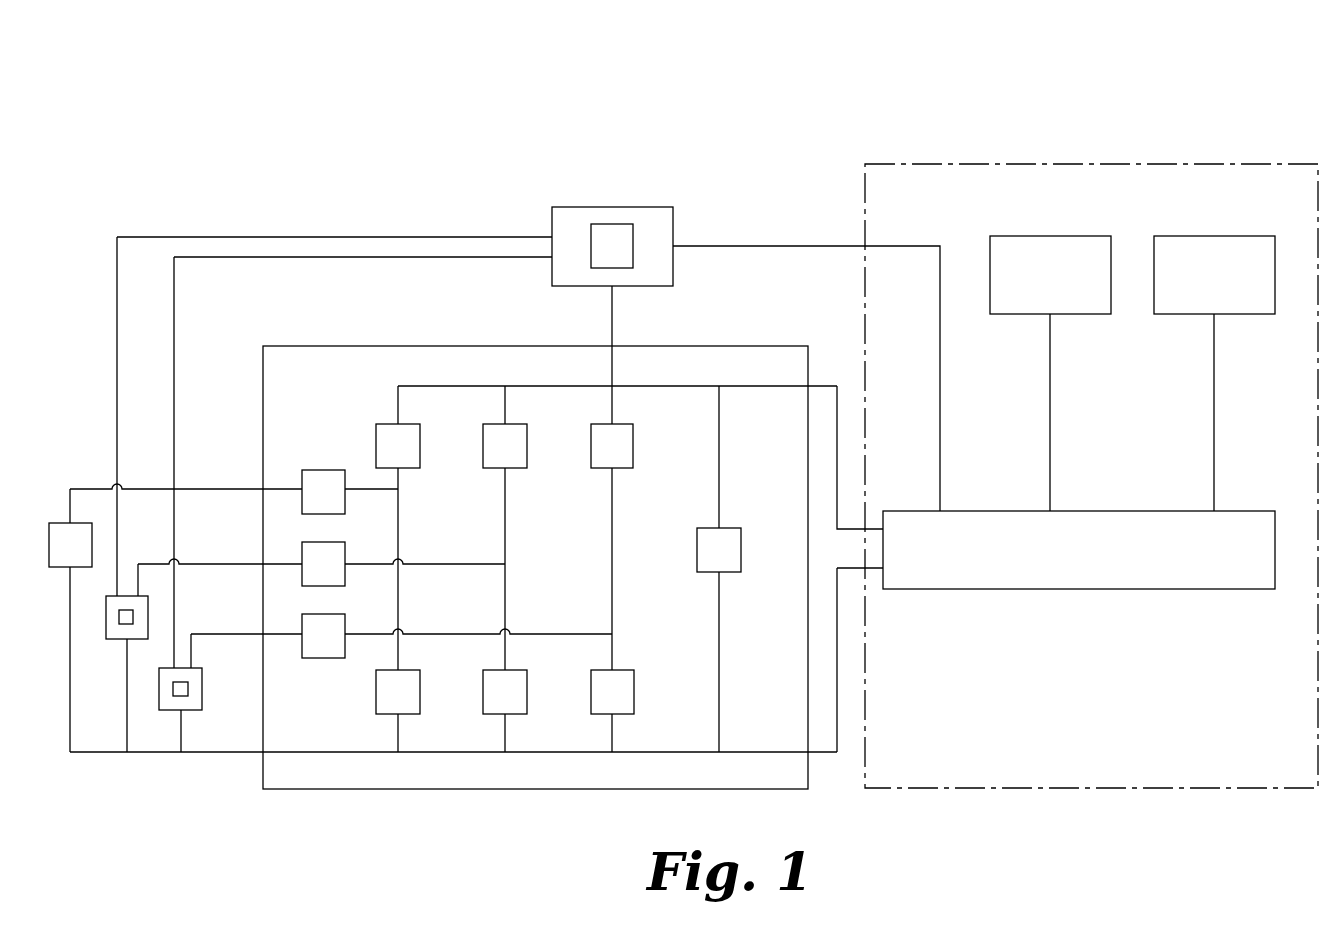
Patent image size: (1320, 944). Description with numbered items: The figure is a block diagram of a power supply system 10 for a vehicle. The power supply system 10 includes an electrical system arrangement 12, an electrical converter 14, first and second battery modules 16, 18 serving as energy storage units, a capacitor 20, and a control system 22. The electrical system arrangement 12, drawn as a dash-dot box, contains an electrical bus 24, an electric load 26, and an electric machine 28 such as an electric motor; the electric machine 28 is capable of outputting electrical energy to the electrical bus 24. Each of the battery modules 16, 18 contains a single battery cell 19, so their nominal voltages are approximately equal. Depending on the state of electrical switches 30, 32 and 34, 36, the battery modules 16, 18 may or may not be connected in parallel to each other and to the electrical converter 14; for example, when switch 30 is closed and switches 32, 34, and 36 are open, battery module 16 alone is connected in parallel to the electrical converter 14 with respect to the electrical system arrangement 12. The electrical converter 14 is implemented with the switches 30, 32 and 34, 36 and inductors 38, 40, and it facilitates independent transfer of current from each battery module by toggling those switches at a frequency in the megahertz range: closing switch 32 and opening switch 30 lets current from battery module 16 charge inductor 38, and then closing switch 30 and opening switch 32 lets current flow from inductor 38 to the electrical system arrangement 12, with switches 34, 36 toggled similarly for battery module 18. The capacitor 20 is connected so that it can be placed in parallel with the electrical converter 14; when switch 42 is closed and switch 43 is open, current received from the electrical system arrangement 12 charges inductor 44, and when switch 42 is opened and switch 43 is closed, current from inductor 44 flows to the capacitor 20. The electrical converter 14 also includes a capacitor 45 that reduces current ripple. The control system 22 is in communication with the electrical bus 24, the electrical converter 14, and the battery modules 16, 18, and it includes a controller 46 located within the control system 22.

The power supply system 10 is at (1208, 96).
The electrical system arrangement 12 is at (1160, 789).
The electrical converter 14 is at (387, 790).
The first battery module 16 is at (202, 692).
The second battery module 18 is at (113, 640).
The battery cell 19 is at (127, 624).
The capacitor 20 is at (49, 549).
The control system 22 is at (577, 287).
The electrical bus 24 is at (1167, 589).
The electric load 26 is at (1057, 236).
The electric machine 28 is at (1220, 236).
The electrical switch 30 is at (633, 446).
The electrical switch 32 is at (634, 692).
The electrical switch 34 is at (527, 446).
The electrical switch 36 is at (527, 692).
The inductor 38 is at (302, 632).
The inductor 40 is at (302, 560).
The switch 42 is at (420, 446).
The switch 43 is at (420, 692).
The inductor 44 is at (302, 489).
The capacitor 45 is at (741, 540).
The controller 46 is at (612, 224).